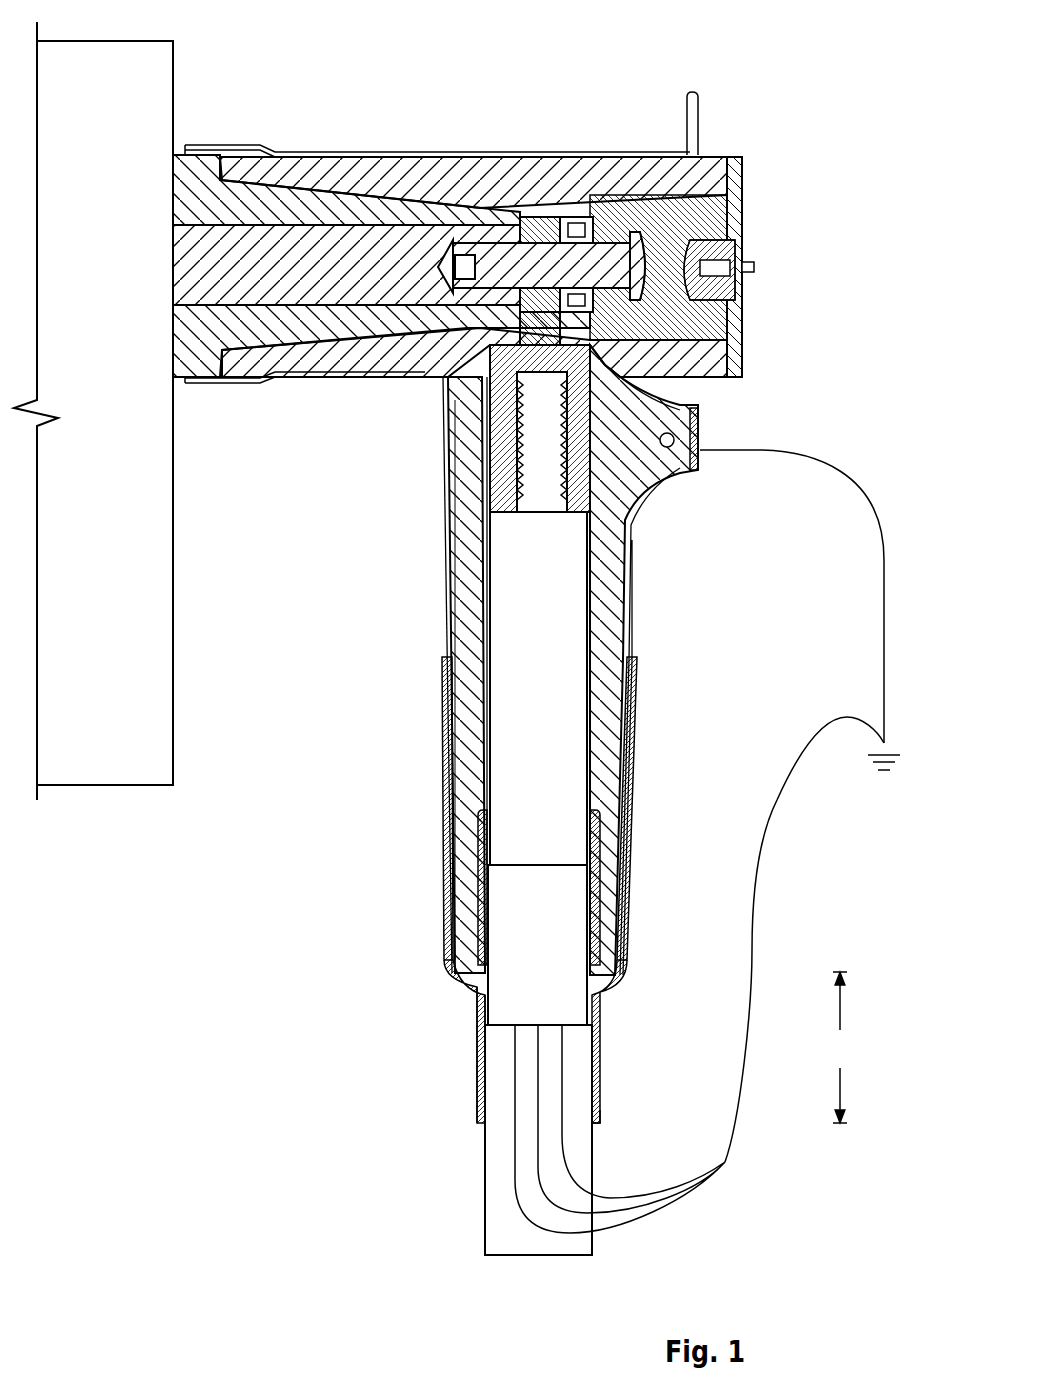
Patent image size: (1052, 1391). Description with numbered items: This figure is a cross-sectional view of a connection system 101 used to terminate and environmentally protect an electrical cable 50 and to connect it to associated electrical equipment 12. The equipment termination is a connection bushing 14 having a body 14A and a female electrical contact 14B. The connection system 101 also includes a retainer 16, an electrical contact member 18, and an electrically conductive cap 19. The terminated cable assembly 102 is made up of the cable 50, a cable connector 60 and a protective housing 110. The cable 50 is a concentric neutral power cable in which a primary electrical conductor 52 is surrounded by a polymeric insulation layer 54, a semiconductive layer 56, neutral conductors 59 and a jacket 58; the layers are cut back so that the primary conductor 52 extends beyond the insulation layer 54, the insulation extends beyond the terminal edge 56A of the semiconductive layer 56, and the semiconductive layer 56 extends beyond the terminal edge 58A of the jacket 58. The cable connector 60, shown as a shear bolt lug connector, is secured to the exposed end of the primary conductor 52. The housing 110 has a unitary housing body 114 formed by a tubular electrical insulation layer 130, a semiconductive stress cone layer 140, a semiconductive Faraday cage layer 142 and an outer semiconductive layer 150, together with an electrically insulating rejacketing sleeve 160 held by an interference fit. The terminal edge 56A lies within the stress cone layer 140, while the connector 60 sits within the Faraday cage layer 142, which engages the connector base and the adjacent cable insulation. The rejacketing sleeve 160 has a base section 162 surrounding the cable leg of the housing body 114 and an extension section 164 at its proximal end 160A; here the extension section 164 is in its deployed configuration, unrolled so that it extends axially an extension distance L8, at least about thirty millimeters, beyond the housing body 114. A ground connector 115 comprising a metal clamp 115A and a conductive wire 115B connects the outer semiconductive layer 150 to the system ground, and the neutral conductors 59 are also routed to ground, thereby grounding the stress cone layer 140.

The electrical equipment 12 is at (163, 80).
The connection bushing 14 is at (430, 333).
The body 14A is at (198, 372).
The female electrical contact 14B is at (345, 277).
The retainer 16 is at (738, 222).
The electrical contact member 18 is at (507, 222).
The electrically conductive cap 19 is at (740, 328).
The electrical cable 50 is at (617, 912).
The primary electrical conductor 52 is at (527, 440).
The polymeric insulation layer 54 is at (530, 620).
The semiconductive layer 56 is at (468, 894).
The terminal edge 56A is at (538, 862).
The jacket 58 is at (487, 1122).
The terminal edge 58A is at (523, 1015).
The neutral conductors 59 is at (643, 1210).
The cable connector 60 is at (569, 435).
The connection system 101 is at (510, 35).
The terminated cable assembly 102 is at (573, 118).
The housing 110 is at (642, 754).
The housing body 114 is at (542, 660).
The ground connector 115 is at (794, 589).
The metal clamp 115A is at (703, 470).
The conductive wire 115B is at (812, 462).
The electrical insulation layer 130 is at (463, 572).
The stress cone layer 140 is at (610, 895).
The Faraday cage layer 142 is at (482, 490).
The outer semiconductive layer 150 is at (452, 637).
The rejacketing sleeve 160 is at (522, 910).
The proximal end 160A is at (596, 1127).
The base section 162 is at (633, 755).
The extension section 164 is at (600, 1058).
The extension distance L8 is at (840, 1047).